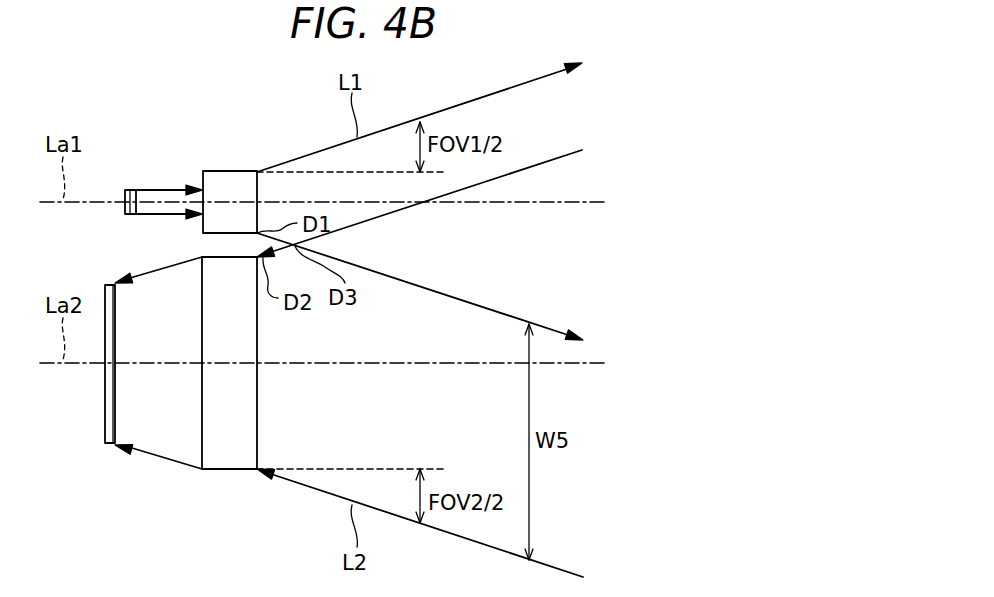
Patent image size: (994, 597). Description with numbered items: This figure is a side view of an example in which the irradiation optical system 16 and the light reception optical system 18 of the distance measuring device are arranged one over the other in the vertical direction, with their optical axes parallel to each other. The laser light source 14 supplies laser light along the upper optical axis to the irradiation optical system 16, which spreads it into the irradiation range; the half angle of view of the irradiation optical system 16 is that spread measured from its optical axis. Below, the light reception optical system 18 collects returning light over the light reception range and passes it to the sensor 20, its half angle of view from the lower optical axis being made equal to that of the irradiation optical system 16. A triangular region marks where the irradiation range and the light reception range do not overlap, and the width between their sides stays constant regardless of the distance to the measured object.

The laser light source 14 is at (127, 207).
The irradiation optical system 16 is at (230, 177).
The light reception optical system 18 is at (230, 460).
The sensor 20 is at (108, 395).